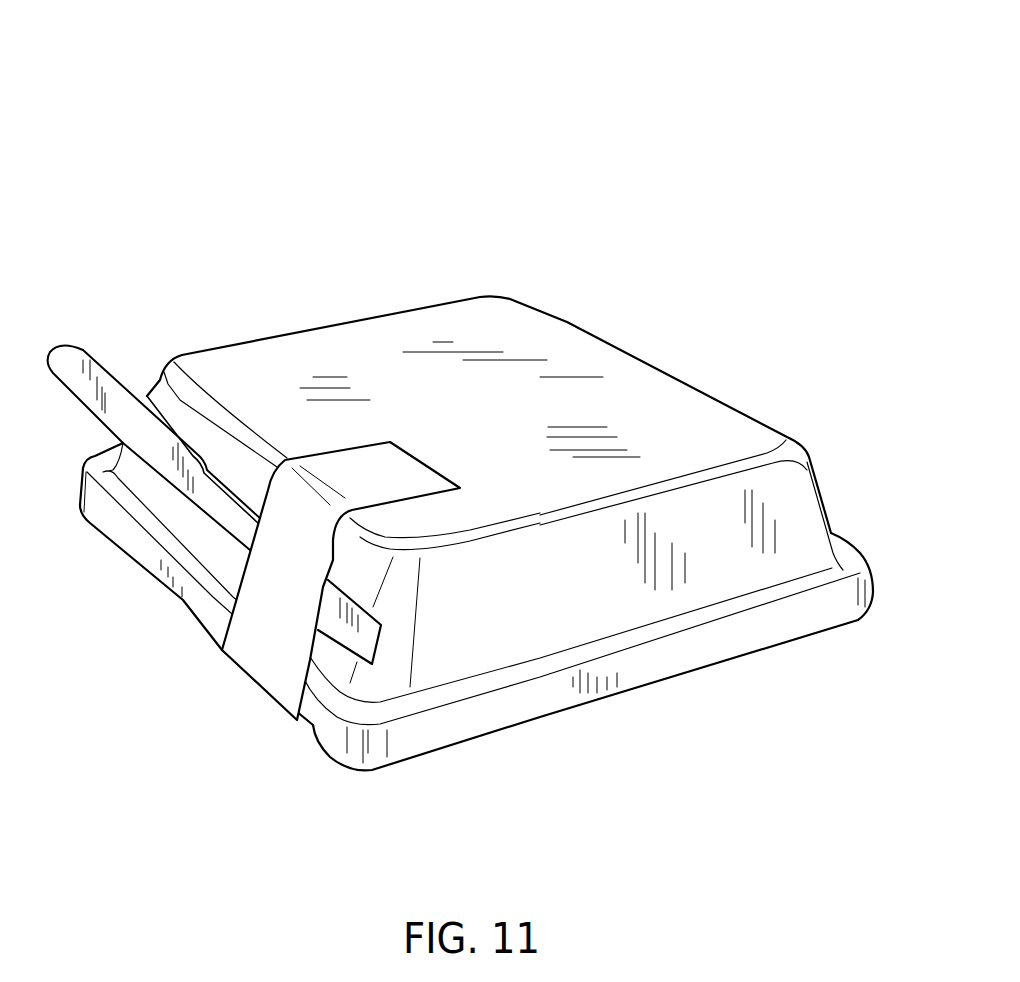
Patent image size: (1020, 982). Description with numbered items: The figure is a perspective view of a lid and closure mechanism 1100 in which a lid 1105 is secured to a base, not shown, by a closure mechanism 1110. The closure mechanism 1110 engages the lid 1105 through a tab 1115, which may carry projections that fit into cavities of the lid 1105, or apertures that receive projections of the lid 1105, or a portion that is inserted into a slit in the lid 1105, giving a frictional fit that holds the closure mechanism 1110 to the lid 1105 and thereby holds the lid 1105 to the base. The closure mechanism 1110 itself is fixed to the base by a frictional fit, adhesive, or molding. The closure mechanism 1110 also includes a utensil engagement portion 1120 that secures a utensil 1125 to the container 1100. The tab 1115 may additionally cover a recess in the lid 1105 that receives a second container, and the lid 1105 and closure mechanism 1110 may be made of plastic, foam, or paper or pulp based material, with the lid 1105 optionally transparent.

The lid and closure mechanism 1100 is at (736, 74).
The lid 1105 is at (575, 320).
The closure mechanism 1110 is at (310, 678).
The tab 1115 is at (404, 450).
The utensil engagement portion 1120 is at (333, 563).
The utensil 1125 is at (380, 636).